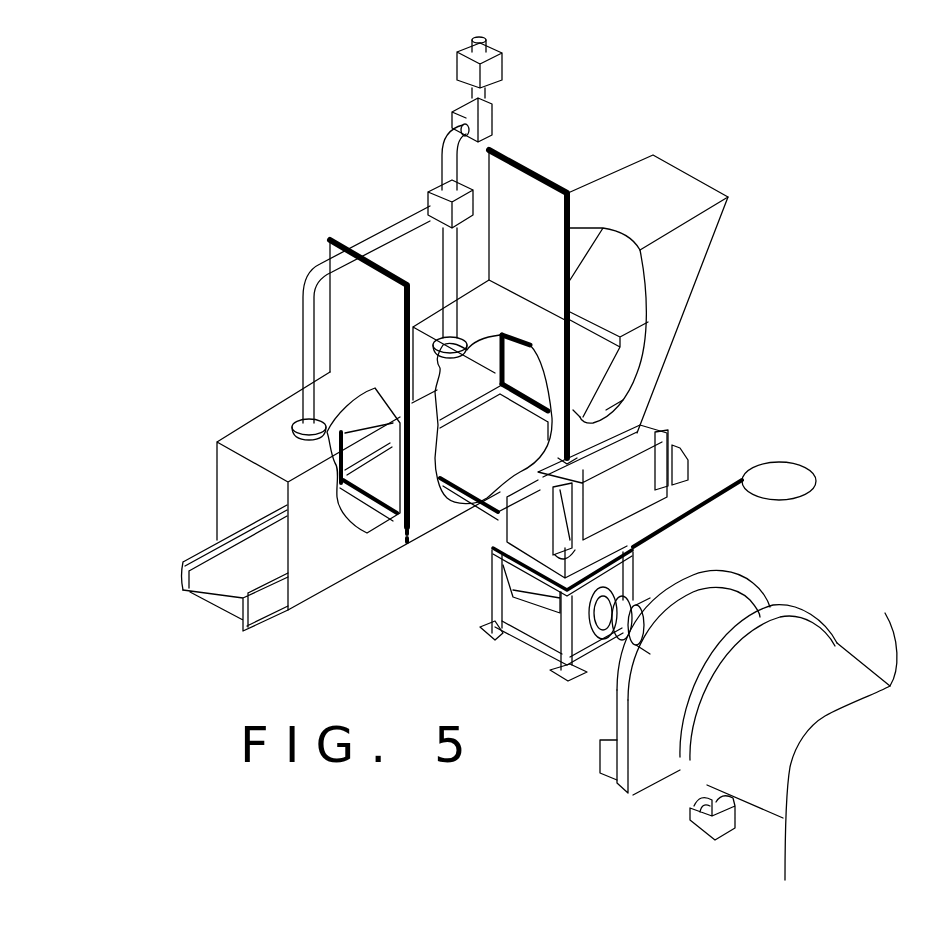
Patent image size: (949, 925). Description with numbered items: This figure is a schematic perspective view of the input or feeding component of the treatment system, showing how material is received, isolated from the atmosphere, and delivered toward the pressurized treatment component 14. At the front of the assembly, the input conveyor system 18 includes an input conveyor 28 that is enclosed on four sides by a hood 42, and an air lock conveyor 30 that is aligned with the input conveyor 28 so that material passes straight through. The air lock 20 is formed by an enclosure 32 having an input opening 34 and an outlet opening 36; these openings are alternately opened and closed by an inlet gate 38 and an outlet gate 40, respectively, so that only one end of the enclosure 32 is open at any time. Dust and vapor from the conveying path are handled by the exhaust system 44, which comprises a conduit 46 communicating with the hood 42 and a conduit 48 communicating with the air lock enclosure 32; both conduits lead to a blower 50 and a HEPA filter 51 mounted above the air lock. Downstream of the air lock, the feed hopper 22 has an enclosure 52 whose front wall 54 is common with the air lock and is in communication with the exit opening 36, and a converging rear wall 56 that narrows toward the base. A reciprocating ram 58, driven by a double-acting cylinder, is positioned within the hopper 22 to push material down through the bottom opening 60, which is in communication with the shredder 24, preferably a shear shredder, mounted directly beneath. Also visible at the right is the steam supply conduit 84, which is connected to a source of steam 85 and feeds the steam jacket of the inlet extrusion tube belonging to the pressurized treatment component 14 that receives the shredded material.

The pressurized treatment component 14 is at (763, 575).
The input conveyor system 18 is at (195, 593).
The air lock 20 is at (532, 160).
The input hopper 22 is at (713, 230).
The shredder 24 is at (653, 413).
The input conveyor 28 is at (220, 565).
The air lock conveyor 30 is at (477, 437).
The enclosure 32 is at (430, 327).
The input opening 34 is at (387, 475).
The outlet opening 36 is at (525, 367).
The inlet gate 38 is at (352, 307).
The outlet gate 40 is at (540, 205).
The hood 42 is at (240, 430).
The exhaust system 44 is at (442, 160).
The conduit 46 is at (310, 362).
The conduit 48 is at (450, 268).
The blower 50 is at (452, 105).
The HEPA filter 51 is at (462, 67).
The enclosure 52 is at (667, 293).
The front wall 54 is at (645, 436).
The converging rear wall 56 is at (613, 370).
The reciprocating ram 58 is at (623, 290).
The bottom opening 60 is at (600, 407).
The steam supply conduit 84 is at (677, 518).
The source of steam 85 is at (815, 470).